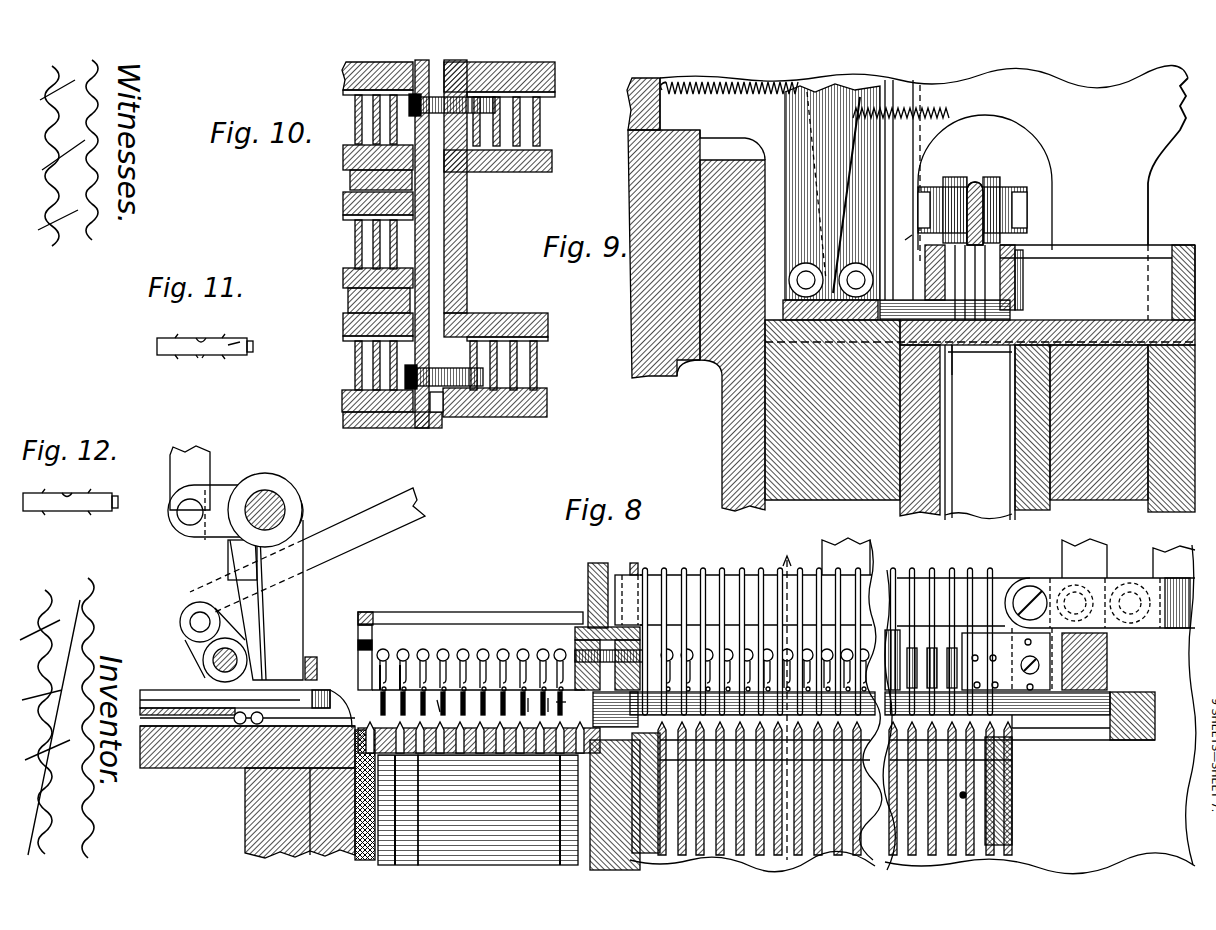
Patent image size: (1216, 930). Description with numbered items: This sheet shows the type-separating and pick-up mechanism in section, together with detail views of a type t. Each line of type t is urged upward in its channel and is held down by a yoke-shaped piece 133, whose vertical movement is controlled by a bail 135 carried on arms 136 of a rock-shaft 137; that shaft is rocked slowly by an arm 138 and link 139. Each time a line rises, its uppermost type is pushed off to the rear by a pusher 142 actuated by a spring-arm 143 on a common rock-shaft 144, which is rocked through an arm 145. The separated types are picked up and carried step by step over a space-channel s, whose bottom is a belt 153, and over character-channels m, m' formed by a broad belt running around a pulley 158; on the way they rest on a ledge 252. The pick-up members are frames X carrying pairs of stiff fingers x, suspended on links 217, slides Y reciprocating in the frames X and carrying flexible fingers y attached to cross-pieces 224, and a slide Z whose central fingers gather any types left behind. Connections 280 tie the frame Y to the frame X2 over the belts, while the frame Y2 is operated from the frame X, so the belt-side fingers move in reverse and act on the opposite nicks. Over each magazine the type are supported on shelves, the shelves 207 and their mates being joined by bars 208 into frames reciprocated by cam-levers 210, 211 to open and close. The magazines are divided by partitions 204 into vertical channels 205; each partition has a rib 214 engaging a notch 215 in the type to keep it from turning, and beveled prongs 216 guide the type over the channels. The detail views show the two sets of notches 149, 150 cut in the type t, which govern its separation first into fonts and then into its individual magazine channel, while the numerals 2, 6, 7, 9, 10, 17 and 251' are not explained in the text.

In FIG. 10, the cross-pieces 224 is at (548, 118).
In FIG. 9, the cross-pieces 224 is at (1022, 296).
In FIG. 8, the cross-pieces 224 is at (695, 640).
In FIG. 10, the fingers x is at (343, 202).
In FIG. 9, the fingers x is at (1020, 283).
In FIG. 10, the flexible fingers y is at (356, 246).
In FIG. 9, the flexible fingers y is at (904, 233).
In FIG. 8, the flexible fingers y is at (566, 705).
In FIG. 10, the frames X is at (548, 316).
In FIG. 9, the frames X is at (1030, 262).
In FIG. 10, the slides Y is at (548, 342).
In FIG. 9, the slides Y is at (1010, 247).
In FIG. 10, the frame X2 is at (343, 405).
In FIG. 10, the frame Y2 is at (343, 347).
In FIG. 10, the connections 280 is at (450, 386).
In FIG. 9, the cam-lever 211 is at (800, 122).
In FIG. 9, the cam-lever 210 is at (903, 104).
In FIG. 9, the links 217 is at (920, 140).
In FIG. 9, the slide Z is at (980, 180).
In FIG. 9, the roller 2 is at (1000, 190).
In FIG. 9, the shelves 207 is at (1060, 310).
In FIG. 9, the bars 208 is at (925, 340).
In FIG. 9, the prongs 216 is at (958, 362).
In FIG. 8, the prongs 216 is at (975, 720).
In FIG. 9, the rib 214 is at (960, 470).
In FIG. 8, the rib 214 is at (965, 797).
In FIG. 9, the partitions 204 is at (1005, 518).
In FIG. 8, the partitions 204 is at (975, 822).
In FIG. 8, the rock-shaft 144 is at (270, 500).
In FIG. 8, the arm 145 is at (215, 537).
In FIG. 8, the link 139 is at (412, 500).
In FIG. 8, the arm 138 is at (182, 630).
In FIG. 8, the rock-shaft 137 is at (212, 660).
In FIG. 8, the arms 136 is at (265, 662).
In FIG. 8, the bail 135 is at (313, 657).
In FIG. 8, the yoke-shaped piece 133 is at (338, 684).
In FIG. 8, the spring-arm 143 is at (195, 692).
In FIG. 8, the pusher 142 is at (222, 766).
In FIG. 8, the type t is at (255, 802).
In FIG. 11, the type t is at (232, 340).
In FIG. 8, the belt 153 is at (398, 810).
In FIG. 8, the pulley 158 is at (486, 810).
In FIG. 8, the hook 251' is at (402, 643).
In FIG. 8, the ledge 252 is at (422, 650).
In FIG. 8, the hooks 10 is at (490, 650).
In FIG. 8, the bracket 17 is at (553, 695).
In FIG. 8, the space-channel s is at (393, 709).
In FIG. 8, the character-channel m is at (487, 708).
In FIG. 8, the character-channel m' is at (497, 712).
In FIG. 8, the tail 6 is at (531, 705).
In FIG. 8, the tail 7 is at (550, 705).
In FIG. 8, the section line 9 is at (786, 707).
In FIG. 8, the vertical channels 205 is at (980, 768).
In FIG. 11, the notches 149 is at (182, 331).
In FIG. 12, the notches 149 is at (112, 493).
In FIG. 11, the notch 215 is at (203, 338).
In FIG. 12, the notch 215 is at (72, 489).
In FIG. 11, the notches 150 is at (210, 357).
In FIG. 12, the notches 150 is at (48, 513).